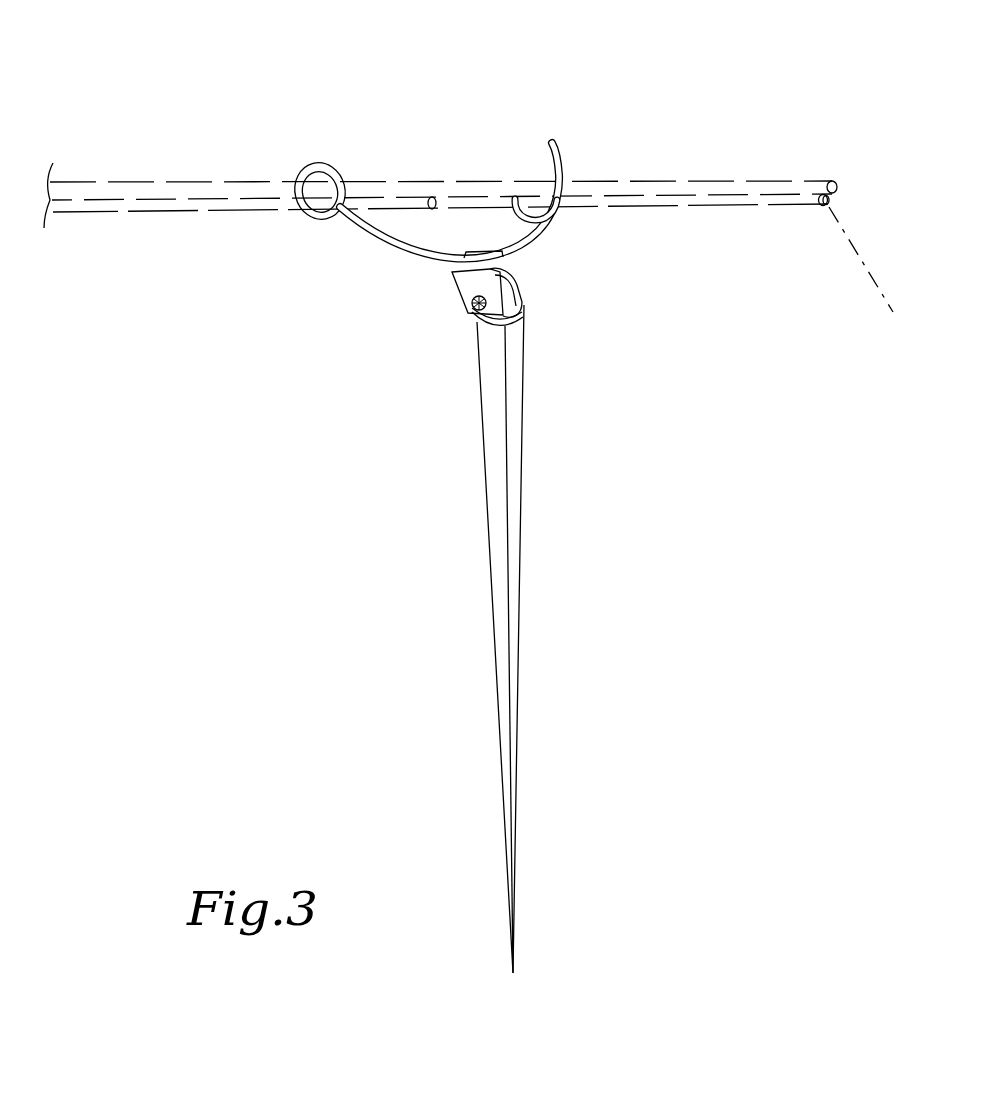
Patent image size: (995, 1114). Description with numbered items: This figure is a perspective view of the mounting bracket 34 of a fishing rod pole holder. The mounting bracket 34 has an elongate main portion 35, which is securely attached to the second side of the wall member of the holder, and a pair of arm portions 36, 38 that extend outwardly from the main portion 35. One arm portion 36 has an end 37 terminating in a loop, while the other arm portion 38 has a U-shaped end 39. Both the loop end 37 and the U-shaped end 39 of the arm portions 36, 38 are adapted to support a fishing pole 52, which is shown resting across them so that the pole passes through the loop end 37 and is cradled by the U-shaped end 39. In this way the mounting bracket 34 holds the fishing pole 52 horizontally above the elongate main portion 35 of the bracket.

The mounting bracket 34 is at (447, 490).
The elongate main portion 35 is at (520, 455).
The arm portion 36 is at (383, 240).
The loop end 37 is at (313, 163).
The arm portion 38 is at (537, 248).
The U-shaped end 39 is at (551, 138).
The fishing pole 52 is at (653, 180).